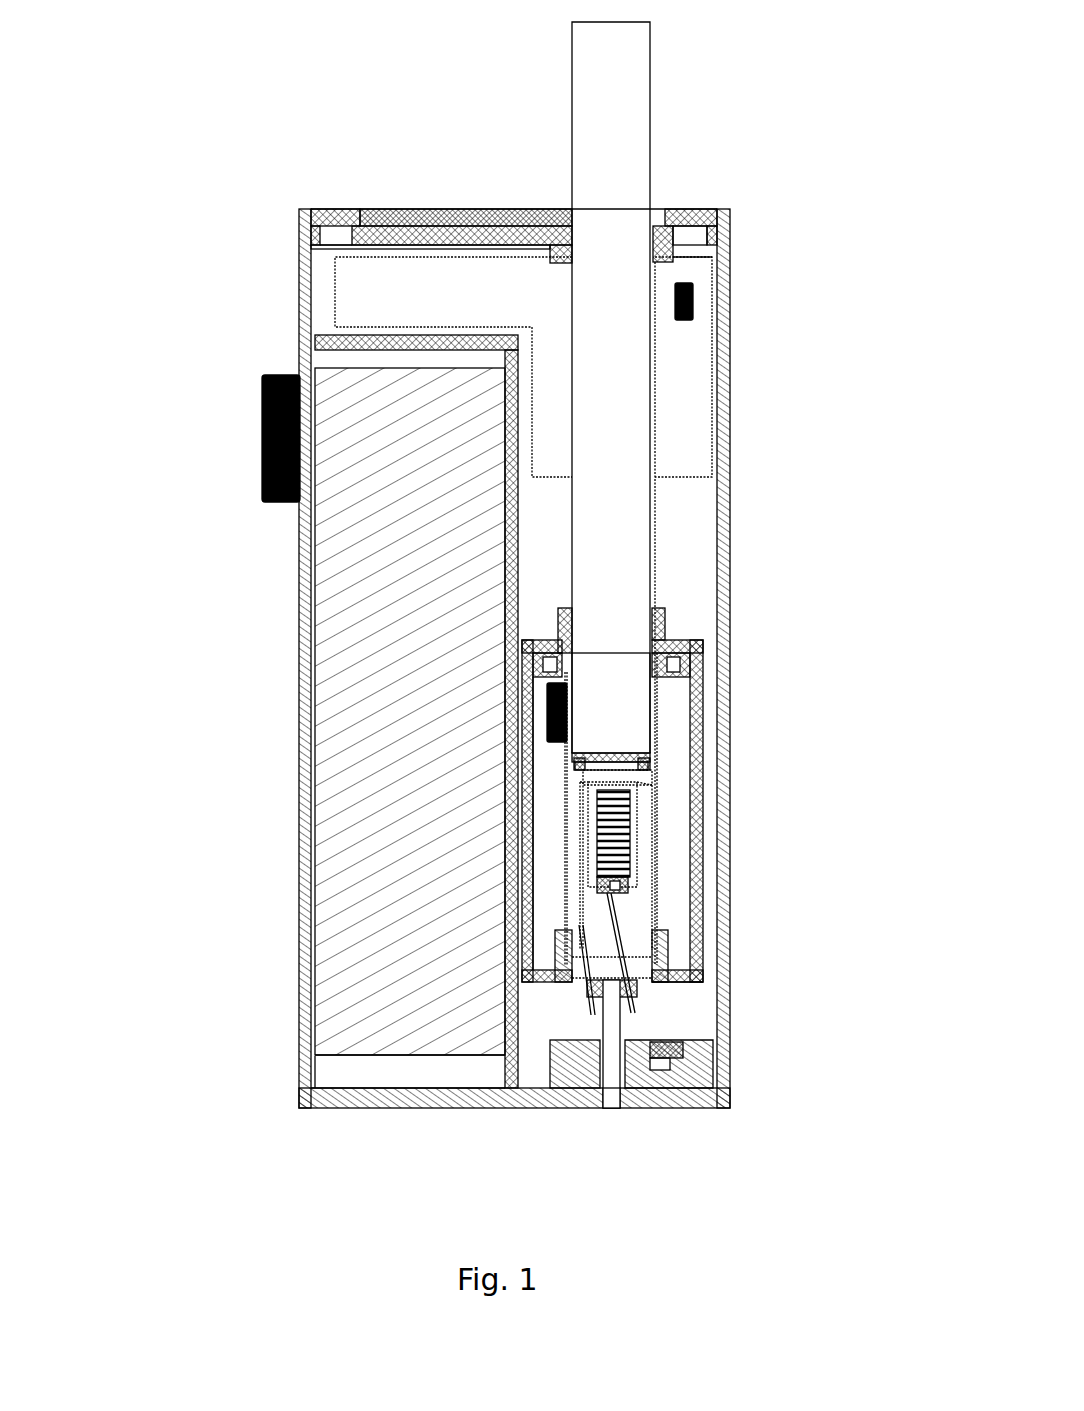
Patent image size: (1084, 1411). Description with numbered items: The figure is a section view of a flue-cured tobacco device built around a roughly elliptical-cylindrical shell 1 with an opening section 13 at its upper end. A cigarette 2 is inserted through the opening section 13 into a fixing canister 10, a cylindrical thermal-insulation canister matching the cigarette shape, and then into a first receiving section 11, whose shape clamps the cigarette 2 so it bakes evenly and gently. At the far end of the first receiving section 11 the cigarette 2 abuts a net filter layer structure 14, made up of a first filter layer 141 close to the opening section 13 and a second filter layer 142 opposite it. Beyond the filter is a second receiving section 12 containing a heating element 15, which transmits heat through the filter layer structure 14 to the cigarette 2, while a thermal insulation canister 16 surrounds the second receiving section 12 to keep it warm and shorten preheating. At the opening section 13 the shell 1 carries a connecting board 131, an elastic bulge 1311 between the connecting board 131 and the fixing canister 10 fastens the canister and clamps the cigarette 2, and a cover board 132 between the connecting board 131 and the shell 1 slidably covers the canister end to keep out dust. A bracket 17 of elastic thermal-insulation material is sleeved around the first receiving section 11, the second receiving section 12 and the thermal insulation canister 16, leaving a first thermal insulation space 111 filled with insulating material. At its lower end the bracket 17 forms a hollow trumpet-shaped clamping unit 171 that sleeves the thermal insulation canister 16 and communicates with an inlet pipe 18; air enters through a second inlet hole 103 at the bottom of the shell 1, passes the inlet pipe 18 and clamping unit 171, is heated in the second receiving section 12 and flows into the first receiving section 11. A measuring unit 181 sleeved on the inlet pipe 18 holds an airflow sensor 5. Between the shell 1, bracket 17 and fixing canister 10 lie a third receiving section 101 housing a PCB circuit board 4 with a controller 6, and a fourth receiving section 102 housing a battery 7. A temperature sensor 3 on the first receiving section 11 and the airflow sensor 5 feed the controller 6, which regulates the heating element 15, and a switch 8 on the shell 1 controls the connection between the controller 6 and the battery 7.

The shell 1 is at (727, 372).
The cigarette 2 is at (622, 107).
The temperature sensor 3 is at (548, 708).
The PCB circuit board 4 is at (395, 290).
The airflow sensor 5 is at (687, 1058).
The controller 6 is at (692, 298).
The battery 7 is at (410, 778).
The switch 8 is at (265, 378).
The fixing canister 10 is at (655, 548).
The first receiving section 11 is at (625, 717).
The second receiving section 12 is at (630, 787).
The opening section 13 is at (665, 202).
The net filter layer structure 14 is at (655, 764).
The heating element 15 is at (638, 823).
The thermal insulation canister 16 is at (660, 865).
The bracket 17 is at (703, 660).
The inlet pipe 18 is at (625, 1030).
The third receiving section 101 is at (680, 500).
The fourth receiving section 102 is at (345, 1070).
The second inlet hole 103 is at (617, 1107).
The first thermal insulation space 111 is at (550, 848).
The connecting board 131 is at (395, 210).
The cover board 132 is at (535, 207).
The first filter layer 141 is at (652, 753).
The second filter layer 142 is at (652, 770).
The clamping unit 171 is at (703, 972).
The measuring unit 181 is at (703, 1087).
The elastic bulge 1311 is at (700, 243).